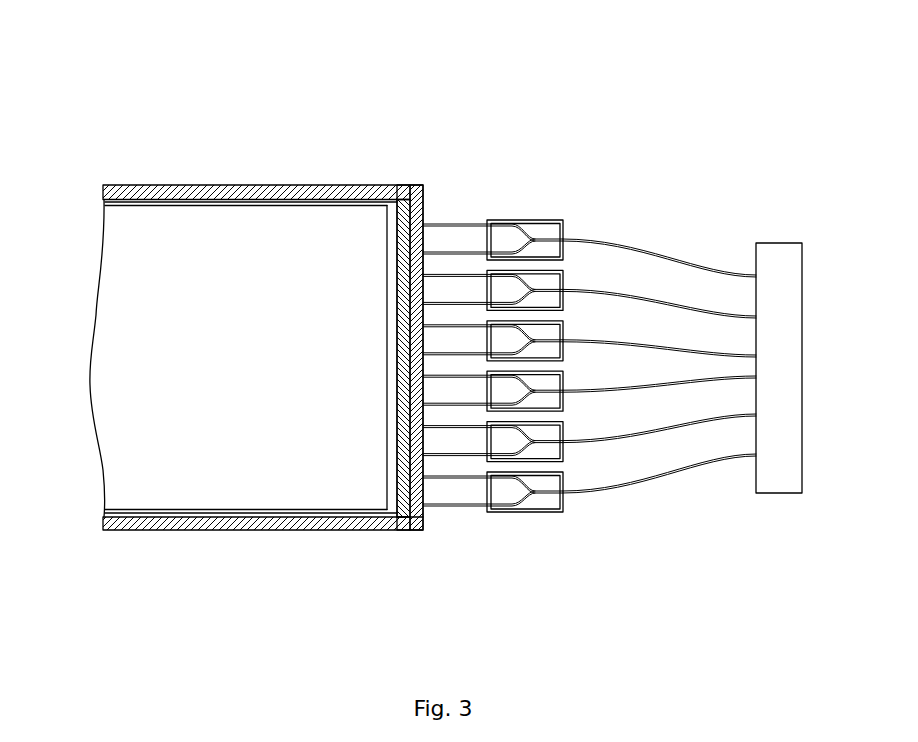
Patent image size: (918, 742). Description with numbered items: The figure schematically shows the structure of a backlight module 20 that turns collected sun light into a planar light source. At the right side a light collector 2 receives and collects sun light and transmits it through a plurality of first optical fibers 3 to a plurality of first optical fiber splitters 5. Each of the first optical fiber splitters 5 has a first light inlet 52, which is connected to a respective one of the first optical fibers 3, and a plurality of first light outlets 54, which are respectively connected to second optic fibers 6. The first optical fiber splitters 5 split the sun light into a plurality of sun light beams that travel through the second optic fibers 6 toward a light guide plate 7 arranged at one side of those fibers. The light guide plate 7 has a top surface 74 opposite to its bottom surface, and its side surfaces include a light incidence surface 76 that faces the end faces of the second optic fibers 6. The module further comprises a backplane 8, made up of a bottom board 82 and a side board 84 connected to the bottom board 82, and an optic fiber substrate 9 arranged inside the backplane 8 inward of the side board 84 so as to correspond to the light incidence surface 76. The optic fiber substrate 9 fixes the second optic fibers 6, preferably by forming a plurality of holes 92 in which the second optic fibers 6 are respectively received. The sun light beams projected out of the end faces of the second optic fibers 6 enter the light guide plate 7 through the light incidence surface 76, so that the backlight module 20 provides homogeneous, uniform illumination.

The backlight module 20 is at (414, 29).
The light collector 2 is at (785, 296).
The first optical fibers 3 is at (676, 254).
The first optical fiber splitters 5 is at (540, 228).
The first light inlet 52 is at (565, 240).
The first light outlets 54 is at (484, 222).
The second optic fibers 6 is at (430, 208).
The light guide plate 7 is at (117, 303).
The top surface 74 is at (155, 443).
The light incidence surface 76 is at (389, 480).
The backplane 8 is at (117, 530).
The bottom board 82 is at (222, 530).
The side board 84 is at (432, 525).
The optic fiber substrate 9 is at (407, 207).
The holes 92 is at (408, 207).